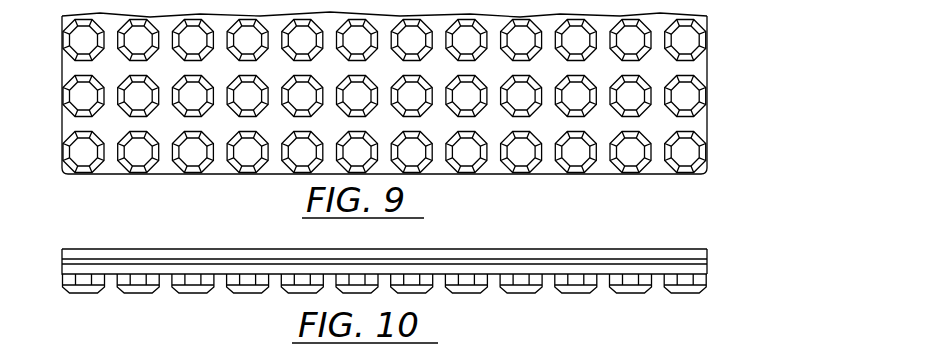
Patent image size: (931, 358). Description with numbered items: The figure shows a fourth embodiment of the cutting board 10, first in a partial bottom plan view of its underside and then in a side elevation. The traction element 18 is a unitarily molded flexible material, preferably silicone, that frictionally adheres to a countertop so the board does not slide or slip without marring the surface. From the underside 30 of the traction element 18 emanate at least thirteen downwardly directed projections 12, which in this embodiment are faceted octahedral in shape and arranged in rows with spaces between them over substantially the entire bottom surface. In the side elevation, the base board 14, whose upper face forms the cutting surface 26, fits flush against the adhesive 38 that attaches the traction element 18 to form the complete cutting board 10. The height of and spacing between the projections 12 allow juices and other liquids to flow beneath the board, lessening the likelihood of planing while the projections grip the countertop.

In FIG. 10, the cutting board 10 is at (441, 260).
In FIG. 9, the projections 12 is at (685, 158).
In FIG. 10, the projections 12 is at (627, 284).
In FIG. 10, the base board 14 is at (622, 253).
In FIG. 9, the traction element 18 is at (703, 25).
In FIG. 10, the traction element 18 is at (675, 270).
In FIG. 10, the cutting surface 26 is at (490, 248).
In FIG. 9, the underside 30 is at (658, 75).
In FIG. 10, the adhesive 38 is at (642, 262).